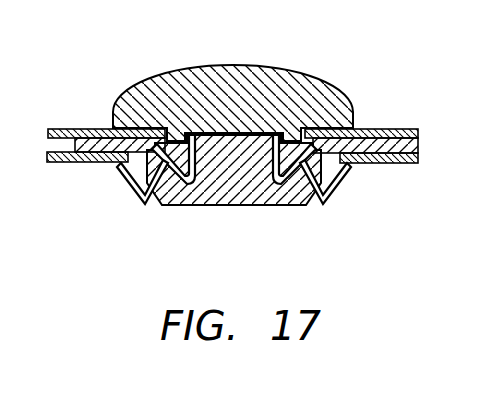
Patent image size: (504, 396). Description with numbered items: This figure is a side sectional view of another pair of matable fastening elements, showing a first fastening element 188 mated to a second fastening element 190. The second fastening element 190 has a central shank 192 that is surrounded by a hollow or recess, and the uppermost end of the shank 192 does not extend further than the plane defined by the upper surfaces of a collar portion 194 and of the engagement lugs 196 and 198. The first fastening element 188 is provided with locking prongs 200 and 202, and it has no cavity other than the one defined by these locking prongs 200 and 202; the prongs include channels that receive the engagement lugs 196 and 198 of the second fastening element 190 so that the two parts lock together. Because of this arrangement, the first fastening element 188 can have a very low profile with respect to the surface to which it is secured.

The first fastening element 188 is at (303, 83).
The second fastening element 190 is at (209, 193).
The shank 192 is at (244, 143).
The collar portion 194 is at (76, 142).
The engagement lug 196 is at (190, 134).
The engagement lug 198 is at (279, 133).
The locking prong 200 is at (131, 174).
The locking prong 202 is at (338, 184).